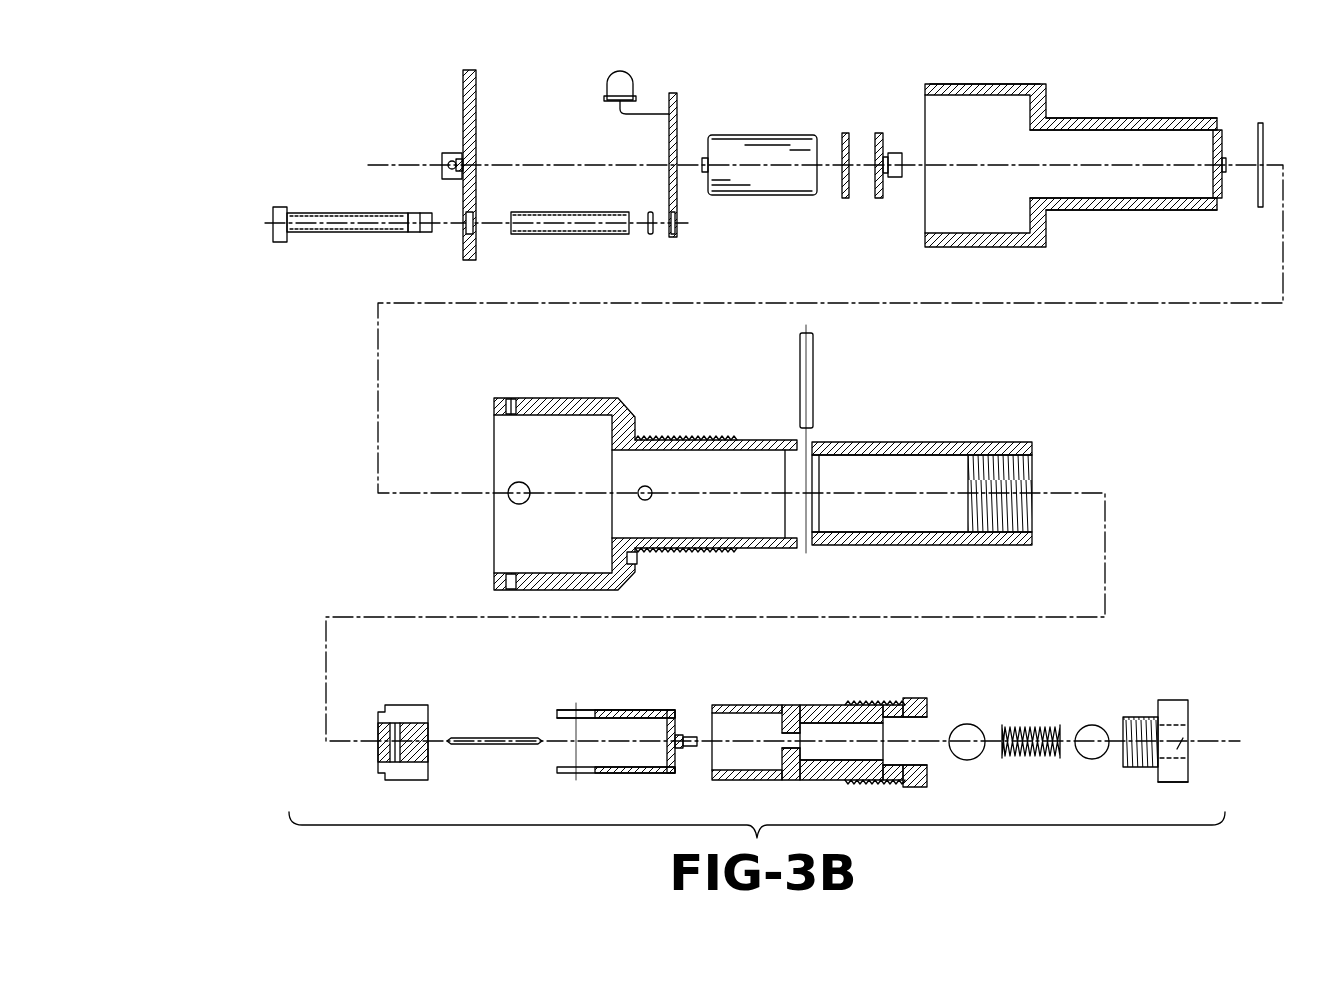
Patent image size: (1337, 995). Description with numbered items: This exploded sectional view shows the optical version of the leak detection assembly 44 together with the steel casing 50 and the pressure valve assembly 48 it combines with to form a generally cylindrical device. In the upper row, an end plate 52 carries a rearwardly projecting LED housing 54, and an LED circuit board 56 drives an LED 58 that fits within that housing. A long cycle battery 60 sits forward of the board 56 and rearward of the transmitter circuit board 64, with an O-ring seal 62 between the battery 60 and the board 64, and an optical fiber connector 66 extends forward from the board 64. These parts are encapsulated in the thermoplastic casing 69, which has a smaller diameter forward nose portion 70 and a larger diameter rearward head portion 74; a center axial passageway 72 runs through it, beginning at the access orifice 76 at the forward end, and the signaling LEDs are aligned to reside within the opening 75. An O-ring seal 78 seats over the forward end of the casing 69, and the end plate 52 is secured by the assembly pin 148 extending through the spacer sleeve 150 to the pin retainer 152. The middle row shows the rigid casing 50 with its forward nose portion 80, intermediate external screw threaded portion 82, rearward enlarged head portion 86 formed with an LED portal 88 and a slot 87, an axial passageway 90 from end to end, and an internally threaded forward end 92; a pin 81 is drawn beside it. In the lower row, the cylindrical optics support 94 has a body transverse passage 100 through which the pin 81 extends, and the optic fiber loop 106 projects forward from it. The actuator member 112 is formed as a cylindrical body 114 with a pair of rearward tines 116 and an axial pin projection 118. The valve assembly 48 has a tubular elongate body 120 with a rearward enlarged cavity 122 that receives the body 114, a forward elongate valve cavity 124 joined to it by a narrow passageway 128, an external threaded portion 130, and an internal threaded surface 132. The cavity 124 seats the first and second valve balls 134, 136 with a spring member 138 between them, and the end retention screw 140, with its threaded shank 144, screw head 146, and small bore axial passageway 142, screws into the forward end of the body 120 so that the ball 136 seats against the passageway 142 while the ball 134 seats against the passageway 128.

The leak detection assembly 44 is at (205, 175).
The pressure valve assembly 48 is at (826, 722).
The casing 50 is at (767, 457).
The end plate 52 is at (465, 85).
The LED housing 54 is at (448, 158).
The LED circuit board 56 is at (677, 98).
The LED 58 is at (620, 72).
The long cycle battery 60 is at (745, 150).
The O-ring seal 62 is at (843, 150).
The transmitter circuit board 64 is at (878, 190).
The optical fiber connector 66 is at (895, 155).
The casing 69 is at (1142, 140).
The forward nose portion 70 is at (1090, 118).
The center axial passageway 72 is at (1152, 148).
The rearward head portion 74 is at (1089, 136).
The opening 75 is at (952, 86).
The access orifice 76 is at (1224, 182).
The O-ring seal 78 is at (1264, 125).
The forward nose portion 80 is at (955, 458).
The pin 81 is at (800, 378).
The external screw threaded portion 82 is at (675, 438).
The rearward enlarged head portion 86 is at (616, 466).
The slot 87 is at (518, 396).
The LED portal 88 is at (515, 502).
The axial passageway 90 is at (874, 478).
The internally threaded forward end 92 is at (1002, 470).
The cylindrical optics support 94 is at (373, 736).
The body transverse passage 100 is at (392, 758).
The optic fiber loop 106 is at (487, 728).
The actuator member 112 is at (594, 731).
The cylindrical body 114 is at (620, 710).
The tine 116 is at (566, 710).
The pin projection 118 is at (688, 750).
The tubular elongate body 120 is at (724, 706).
The rearward enlarged cavity 122 is at (748, 762).
The forward elongate valve cavity 124 is at (840, 762).
The narrow passageway 128 is at (788, 737).
The external threaded portion 130 is at (862, 702).
The internal threaded surface 132 is at (905, 760).
The first valve ball 134 is at (968, 738).
The second valve ball 136 is at (1093, 738).
The spring member 138 is at (1025, 760).
The end retention screw 140 is at (1220, 727).
The small bore axial passageway 142 is at (1190, 742).
The cap threads 144 is at (1145, 770).
The screw head 146 is at (1180, 768).
The assembly pin 148 is at (345, 215).
The spacer sleeve 150 is at (575, 237).
The pin retainer 152 is at (651, 236).